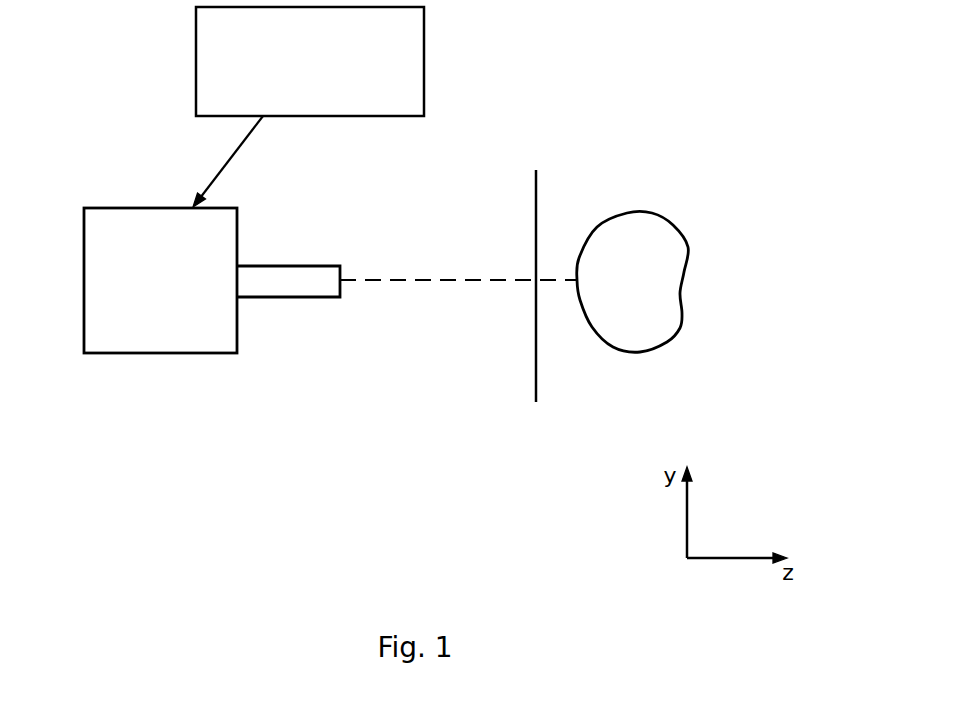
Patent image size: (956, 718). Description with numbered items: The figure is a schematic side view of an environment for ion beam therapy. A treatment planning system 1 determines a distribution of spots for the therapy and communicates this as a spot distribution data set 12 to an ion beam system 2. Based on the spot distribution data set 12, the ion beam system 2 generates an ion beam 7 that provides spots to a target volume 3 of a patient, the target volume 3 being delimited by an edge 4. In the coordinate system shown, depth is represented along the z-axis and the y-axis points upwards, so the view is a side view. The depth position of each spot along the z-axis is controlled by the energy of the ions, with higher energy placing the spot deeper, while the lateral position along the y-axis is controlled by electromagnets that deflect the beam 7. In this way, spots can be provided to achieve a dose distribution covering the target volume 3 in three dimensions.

The treatment planning system 1 is at (302, 40).
The spot distribution data set 12 is at (220, 167).
The ion beam system 2 is at (282, 266).
The ion beam 7 is at (392, 280).
The target volume 3 is at (650, 247).
The edge 4 is at (682, 328).